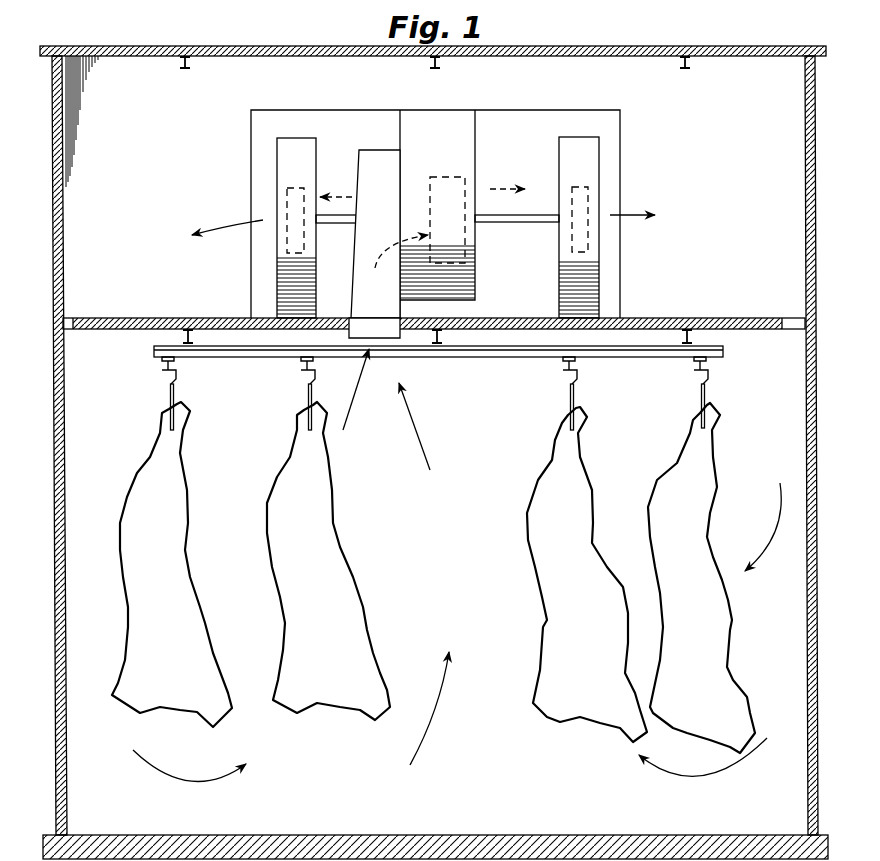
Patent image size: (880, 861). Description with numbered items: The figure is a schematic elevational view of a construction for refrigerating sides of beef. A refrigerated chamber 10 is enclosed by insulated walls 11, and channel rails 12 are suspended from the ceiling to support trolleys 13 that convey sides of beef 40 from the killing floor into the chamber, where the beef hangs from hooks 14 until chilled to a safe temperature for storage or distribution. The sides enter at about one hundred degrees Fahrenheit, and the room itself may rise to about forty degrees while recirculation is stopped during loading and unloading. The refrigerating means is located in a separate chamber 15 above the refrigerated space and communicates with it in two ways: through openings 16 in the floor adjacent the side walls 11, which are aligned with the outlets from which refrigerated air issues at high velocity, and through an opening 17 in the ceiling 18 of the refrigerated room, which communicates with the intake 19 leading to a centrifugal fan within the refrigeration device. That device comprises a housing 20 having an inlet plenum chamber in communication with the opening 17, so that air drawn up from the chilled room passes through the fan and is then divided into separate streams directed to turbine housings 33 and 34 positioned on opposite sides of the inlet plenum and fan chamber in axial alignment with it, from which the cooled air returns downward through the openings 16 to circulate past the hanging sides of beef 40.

The refrigerated chamber 10 is at (66, 742).
The insulated walls 11 is at (67, 692).
The channel rails 12 is at (466, 357).
The trolleys 13 is at (163, 373).
The hooks 14 is at (170, 400).
The separate chamber 15 is at (172, 199).
The openings 16 is at (83, 358).
The opening 17 is at (380, 338).
The ceiling 18 is at (639, 318).
The intake 19 is at (383, 306).
The housing 20 is at (360, 274).
The turbine housing 33 is at (277, 257).
The turbine housing 34 is at (599, 257).
The sides of beef 40 is at (170, 576).